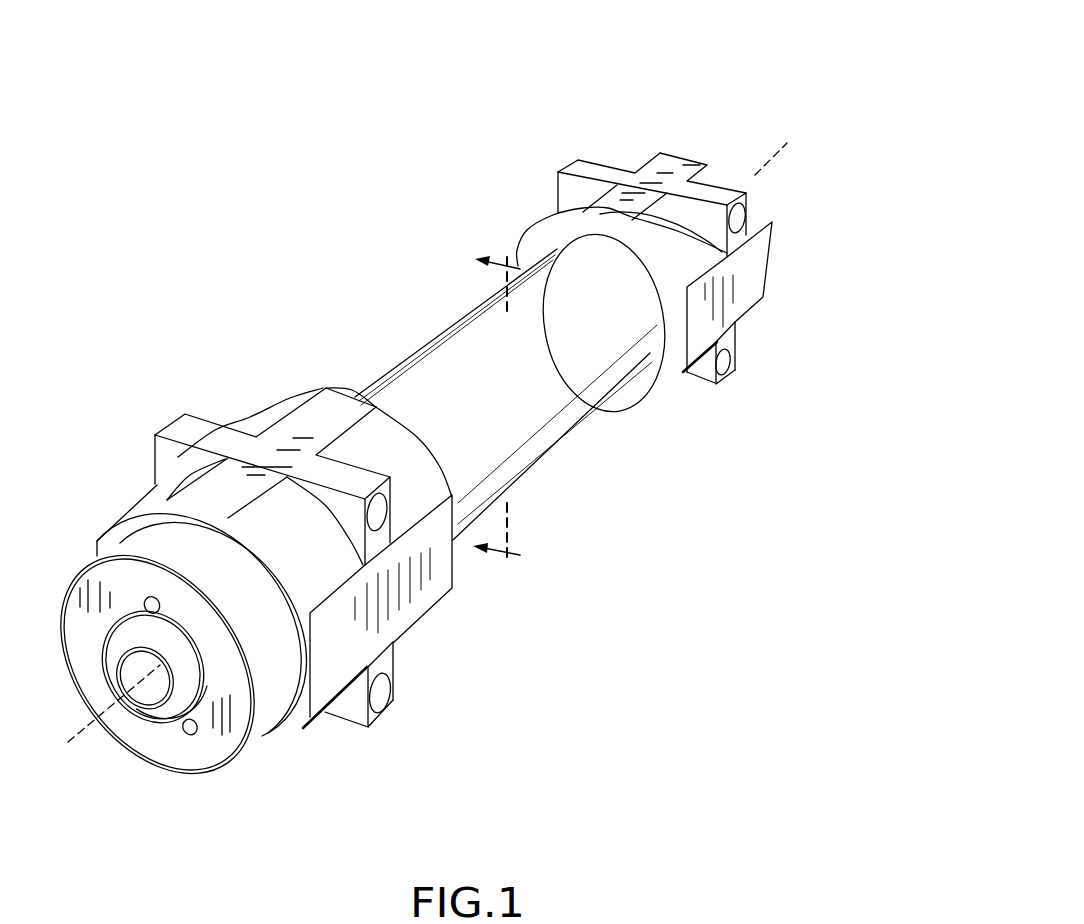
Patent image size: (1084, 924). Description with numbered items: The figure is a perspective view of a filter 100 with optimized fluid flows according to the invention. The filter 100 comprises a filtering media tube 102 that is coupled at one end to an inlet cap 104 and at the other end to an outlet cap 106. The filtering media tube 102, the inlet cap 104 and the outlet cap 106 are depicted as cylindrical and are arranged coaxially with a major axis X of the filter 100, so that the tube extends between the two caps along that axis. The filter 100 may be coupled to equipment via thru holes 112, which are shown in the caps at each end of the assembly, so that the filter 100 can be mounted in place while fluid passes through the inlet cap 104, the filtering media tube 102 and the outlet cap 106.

The filter 100 is at (700, 74).
The filtering media tube 102 is at (543, 455).
The inlet cap 104 is at (435, 607).
The outlet cap 106 is at (735, 322).
The thru holes 112 is at (738, 217).